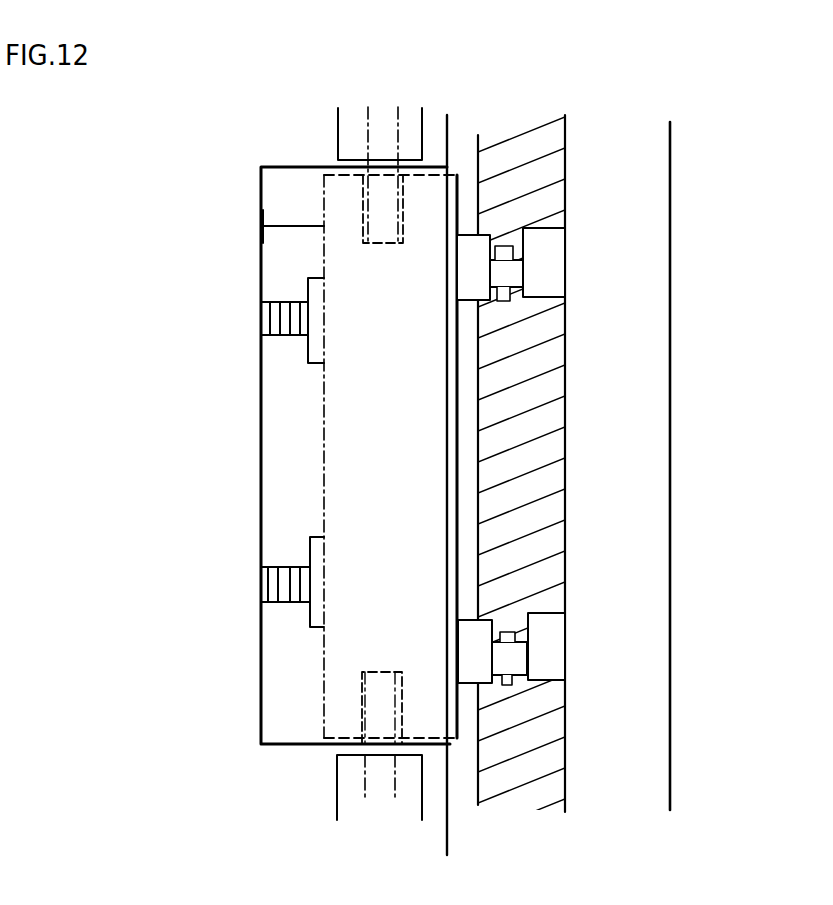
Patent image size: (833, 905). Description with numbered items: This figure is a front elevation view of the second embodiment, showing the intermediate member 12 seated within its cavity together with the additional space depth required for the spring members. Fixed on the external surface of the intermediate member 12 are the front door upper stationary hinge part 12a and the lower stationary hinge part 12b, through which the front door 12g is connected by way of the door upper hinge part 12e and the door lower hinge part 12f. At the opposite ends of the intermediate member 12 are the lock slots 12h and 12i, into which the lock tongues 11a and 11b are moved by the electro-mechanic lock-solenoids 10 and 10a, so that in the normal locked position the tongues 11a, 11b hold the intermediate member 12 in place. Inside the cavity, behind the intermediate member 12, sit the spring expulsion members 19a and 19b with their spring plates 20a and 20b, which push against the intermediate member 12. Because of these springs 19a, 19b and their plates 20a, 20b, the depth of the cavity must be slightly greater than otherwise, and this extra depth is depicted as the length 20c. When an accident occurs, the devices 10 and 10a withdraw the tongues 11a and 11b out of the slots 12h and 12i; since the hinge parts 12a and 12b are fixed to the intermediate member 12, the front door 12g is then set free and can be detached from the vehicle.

The electro mechanic lock-solenoid 10 is at (408, 117).
The electro mechanic lock-solenoid 10a is at (387, 798).
The lock tongue 11a is at (387, 215).
The lock tongue 11b is at (383, 698).
The intermediate member 12 is at (384, 432).
The upper stationary hinge part 12a is at (470, 263).
The lower stationary hinge part 12b is at (472, 643).
The door upper hinge part 12e is at (543, 270).
The door lower hinge part 12f is at (542, 640).
The front door 12g is at (612, 457).
The lock slot 12h is at (357, 244).
The lock slot 12i is at (355, 673).
The spring expulsion member 19a is at (285, 338).
The spring expulsion member 19b is at (283, 603).
The spring plate 20a is at (307, 285).
The spring plate 20b is at (308, 547).
The extra depth length 20c is at (295, 223).